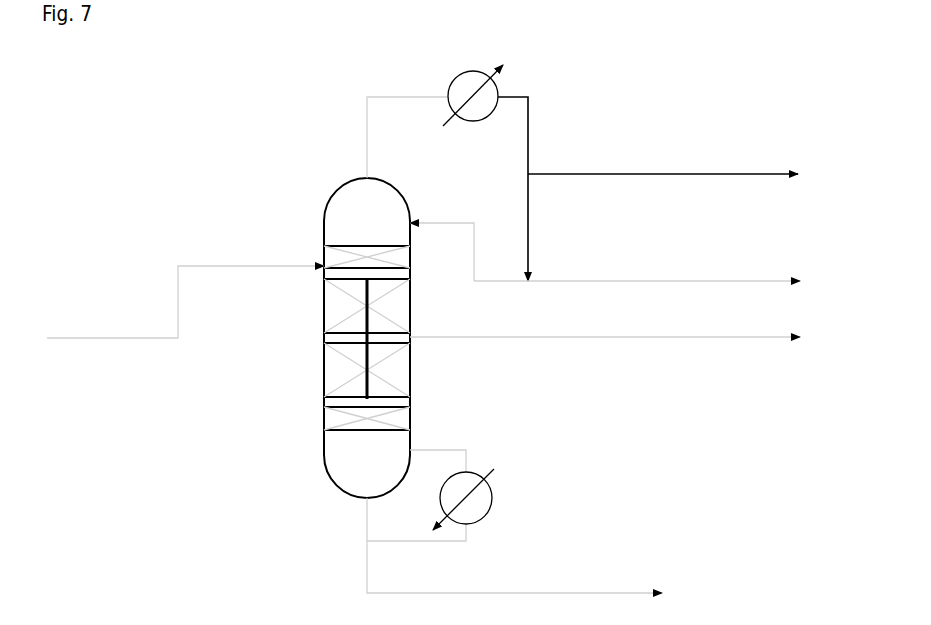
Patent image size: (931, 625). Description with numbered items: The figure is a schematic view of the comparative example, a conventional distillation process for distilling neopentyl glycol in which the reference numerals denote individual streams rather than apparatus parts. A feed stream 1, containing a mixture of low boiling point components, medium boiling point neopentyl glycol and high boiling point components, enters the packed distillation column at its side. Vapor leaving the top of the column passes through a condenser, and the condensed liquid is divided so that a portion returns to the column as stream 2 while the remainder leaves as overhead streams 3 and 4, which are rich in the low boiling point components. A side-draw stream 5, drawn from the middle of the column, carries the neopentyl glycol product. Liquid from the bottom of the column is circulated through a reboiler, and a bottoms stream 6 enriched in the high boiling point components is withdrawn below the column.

The stream 1 is at (133, 281).
The stream 2 is at (455, 166).
The stream 3 is at (738, 117).
The stream 4 is at (747, 232).
The stream 5 is at (747, 290).
The stream 6 is at (566, 537).